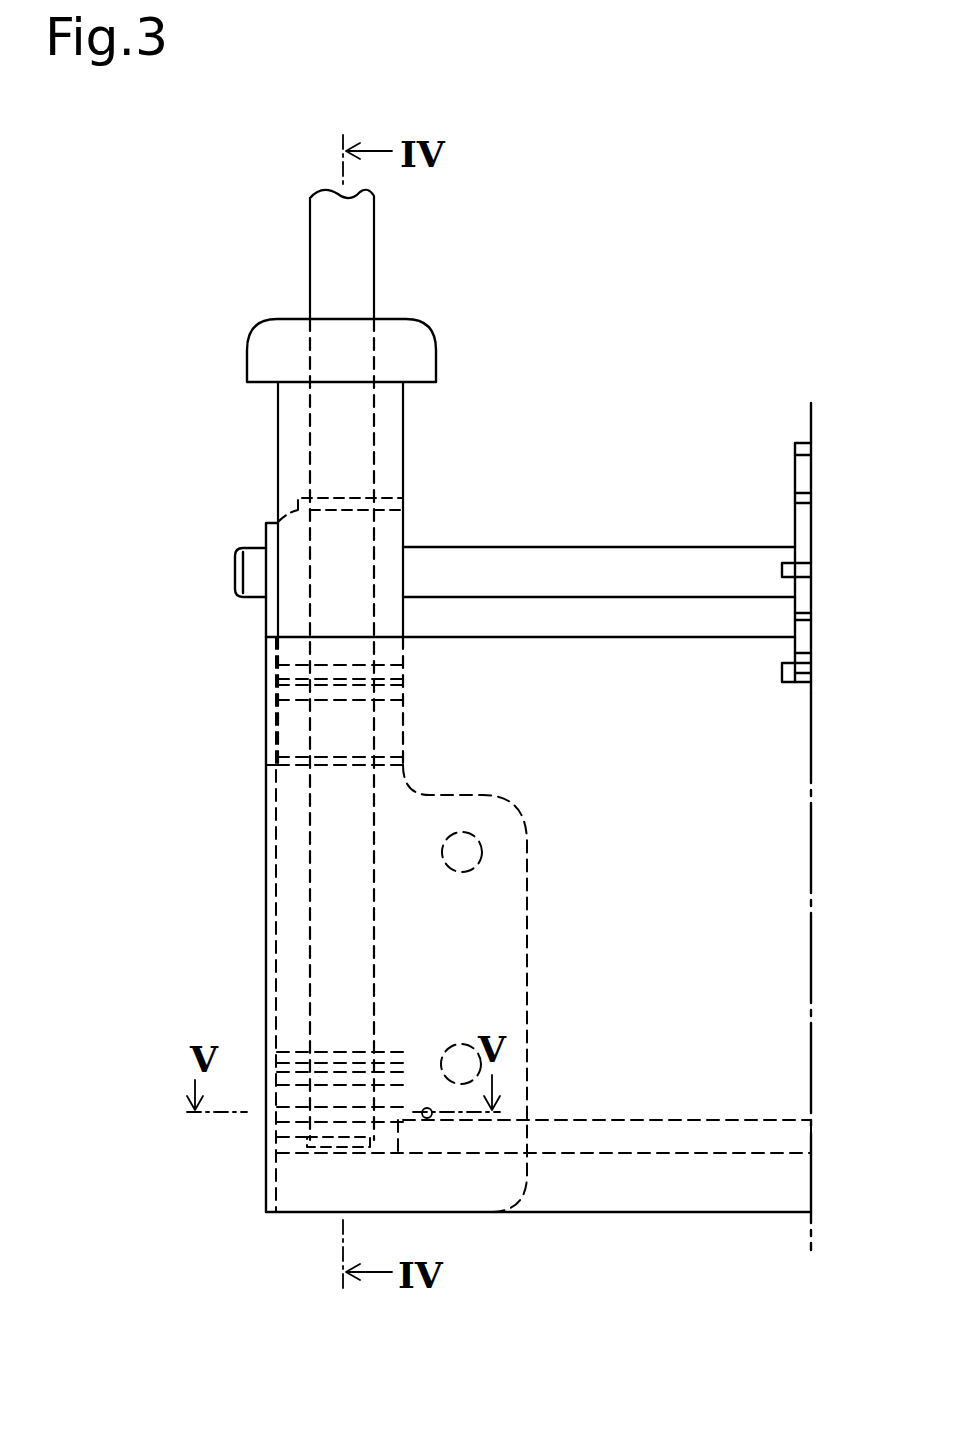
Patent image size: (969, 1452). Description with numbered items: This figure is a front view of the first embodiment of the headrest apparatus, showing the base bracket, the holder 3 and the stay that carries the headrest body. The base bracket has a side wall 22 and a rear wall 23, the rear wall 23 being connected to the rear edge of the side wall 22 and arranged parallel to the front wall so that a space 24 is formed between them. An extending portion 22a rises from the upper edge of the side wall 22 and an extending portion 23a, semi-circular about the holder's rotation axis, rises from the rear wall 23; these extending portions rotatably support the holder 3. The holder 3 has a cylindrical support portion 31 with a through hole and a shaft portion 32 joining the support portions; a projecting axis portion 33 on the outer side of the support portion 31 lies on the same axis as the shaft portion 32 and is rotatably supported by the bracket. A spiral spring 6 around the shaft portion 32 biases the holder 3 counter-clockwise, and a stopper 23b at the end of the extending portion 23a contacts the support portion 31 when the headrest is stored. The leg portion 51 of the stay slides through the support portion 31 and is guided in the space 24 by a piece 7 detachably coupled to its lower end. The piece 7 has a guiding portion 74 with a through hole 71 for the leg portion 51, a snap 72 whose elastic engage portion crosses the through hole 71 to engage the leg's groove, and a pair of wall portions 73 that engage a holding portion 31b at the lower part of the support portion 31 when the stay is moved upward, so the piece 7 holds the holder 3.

The leg portion 51 is at (362, 258).
The holder 3 is at (462, 350).
The support portion 31 is at (287, 428).
The holding portion 31b is at (286, 690).
The stopper 23b is at (355, 500).
The extending portion 23a is at (387, 538).
The extending portion 22a is at (266, 528).
The projecting axis portion 33 is at (252, 587).
The shaft portion 32 is at (610, 560).
The spiral spring 6 is at (800, 499).
The side wall 22 is at (272, 852).
The space 24 is at (293, 938).
The rear wall 23 is at (515, 920).
The wall portion 73 is at (290, 1062).
The piece 7 is at (630, 1168).
The snap 72 is at (412, 1113).
The through hole 71 is at (370, 1142).
The guiding portion 74 is at (293, 1143).